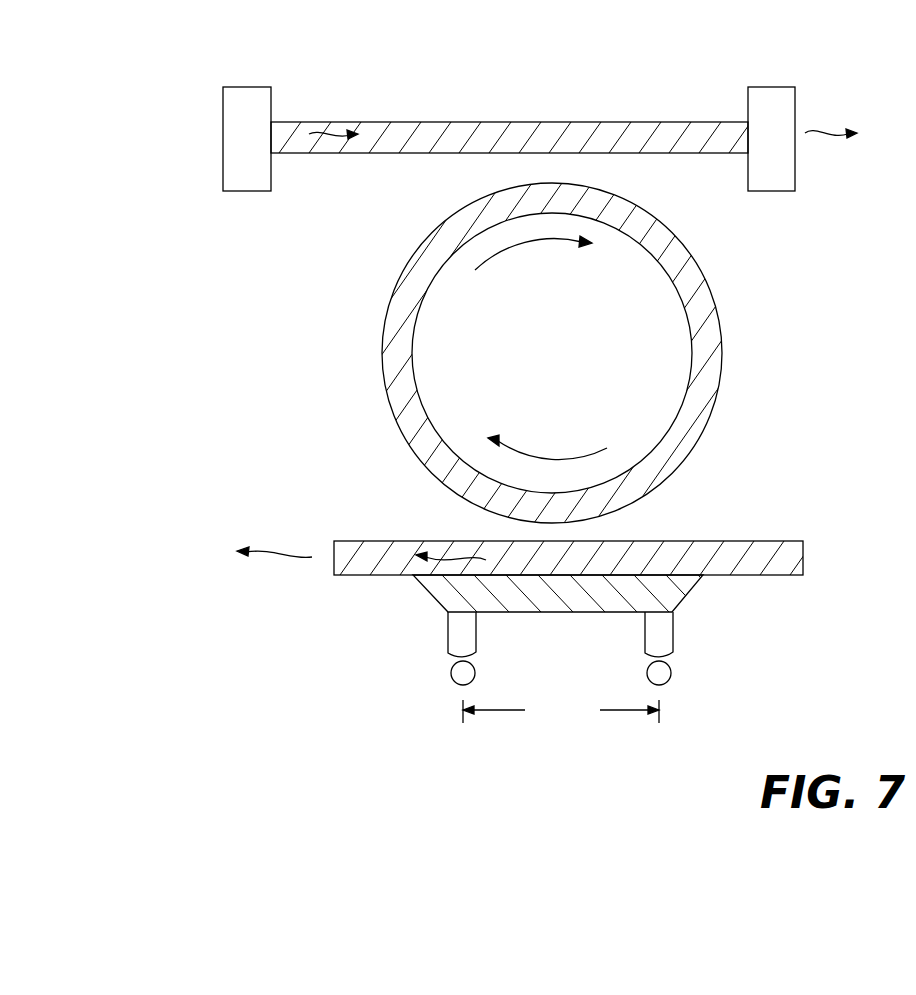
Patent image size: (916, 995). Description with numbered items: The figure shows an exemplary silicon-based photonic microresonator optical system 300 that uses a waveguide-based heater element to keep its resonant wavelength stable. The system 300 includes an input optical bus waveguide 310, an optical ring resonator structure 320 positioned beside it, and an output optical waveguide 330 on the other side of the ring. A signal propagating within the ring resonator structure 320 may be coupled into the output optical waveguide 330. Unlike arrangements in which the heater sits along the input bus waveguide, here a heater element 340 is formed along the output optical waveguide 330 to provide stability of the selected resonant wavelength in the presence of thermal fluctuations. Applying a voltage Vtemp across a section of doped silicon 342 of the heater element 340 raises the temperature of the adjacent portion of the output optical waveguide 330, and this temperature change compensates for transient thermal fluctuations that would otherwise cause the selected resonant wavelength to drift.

The optical system 300 is at (139, 101).
The input optical bus waveguide 310 is at (683, 130).
The optical ring resonator structure 320 is at (708, 320).
The output optical waveguide 330 is at (773, 550).
The heater element 340 is at (710, 615).
The section of doped silicon 342 is at (586, 601).